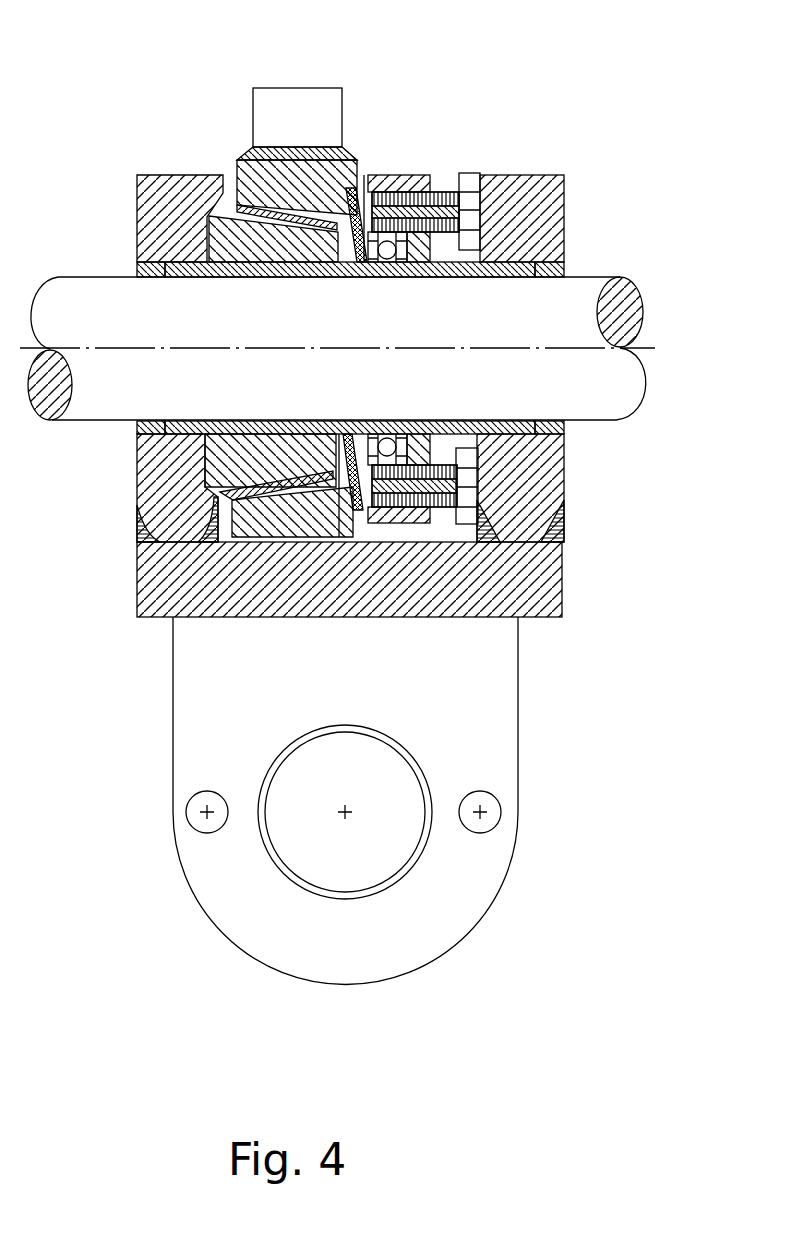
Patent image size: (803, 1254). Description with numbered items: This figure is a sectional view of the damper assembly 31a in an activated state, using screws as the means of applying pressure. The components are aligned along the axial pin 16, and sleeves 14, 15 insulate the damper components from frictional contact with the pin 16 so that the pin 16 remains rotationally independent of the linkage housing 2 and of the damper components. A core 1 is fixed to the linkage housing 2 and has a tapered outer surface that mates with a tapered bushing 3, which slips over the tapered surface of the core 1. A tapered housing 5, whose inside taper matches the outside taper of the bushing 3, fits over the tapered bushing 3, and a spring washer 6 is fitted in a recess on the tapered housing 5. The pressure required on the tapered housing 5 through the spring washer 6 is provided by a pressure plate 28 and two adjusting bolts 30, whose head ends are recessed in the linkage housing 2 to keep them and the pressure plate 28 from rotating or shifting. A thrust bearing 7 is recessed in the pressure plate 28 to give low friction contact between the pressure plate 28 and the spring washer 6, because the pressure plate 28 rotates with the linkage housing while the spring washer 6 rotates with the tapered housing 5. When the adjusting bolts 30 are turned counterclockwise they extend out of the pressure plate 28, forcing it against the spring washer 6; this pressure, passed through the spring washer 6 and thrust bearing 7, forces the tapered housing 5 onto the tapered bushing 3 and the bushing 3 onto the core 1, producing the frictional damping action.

The core 1 is at (208, 240).
The linkage housing 2 is at (177, 192).
The tapered bushing 3 is at (238, 196).
The tapered housing 5 is at (292, 165).
The spring washer 6 is at (352, 190).
The thrust bearing 7 is at (386, 186).
The sleeve 14 is at (564, 270).
The sleeve 15 is at (137, 268).
The axial pin 16 is at (571, 300).
The pressure plate 28 is at (410, 192).
The adjusting bolts 30 is at (455, 195).
The damper assembly 31a is at (422, 75).